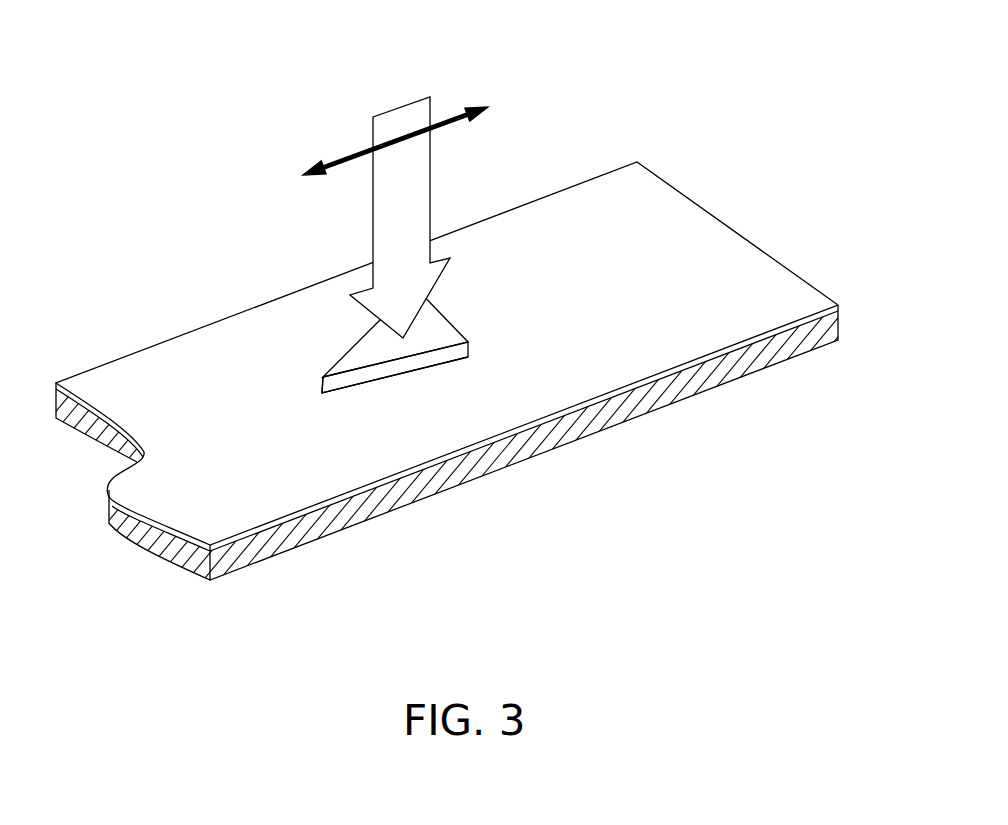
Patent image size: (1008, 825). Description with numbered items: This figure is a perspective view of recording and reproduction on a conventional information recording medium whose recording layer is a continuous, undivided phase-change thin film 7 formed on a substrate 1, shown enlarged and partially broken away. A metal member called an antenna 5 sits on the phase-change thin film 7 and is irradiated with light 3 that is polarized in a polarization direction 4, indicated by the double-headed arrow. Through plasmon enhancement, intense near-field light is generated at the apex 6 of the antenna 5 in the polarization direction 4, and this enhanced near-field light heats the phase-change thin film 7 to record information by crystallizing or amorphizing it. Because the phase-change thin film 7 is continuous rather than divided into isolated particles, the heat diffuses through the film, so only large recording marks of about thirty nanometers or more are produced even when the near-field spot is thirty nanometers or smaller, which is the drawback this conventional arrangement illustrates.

The substrate 1 is at (325, 520).
The light 3 is at (432, 185).
The polarization direction 4 is at (342, 157).
The antenna 5 is at (368, 348).
The apex 6 is at (327, 378).
The phase-change thin film 7 is at (477, 407).